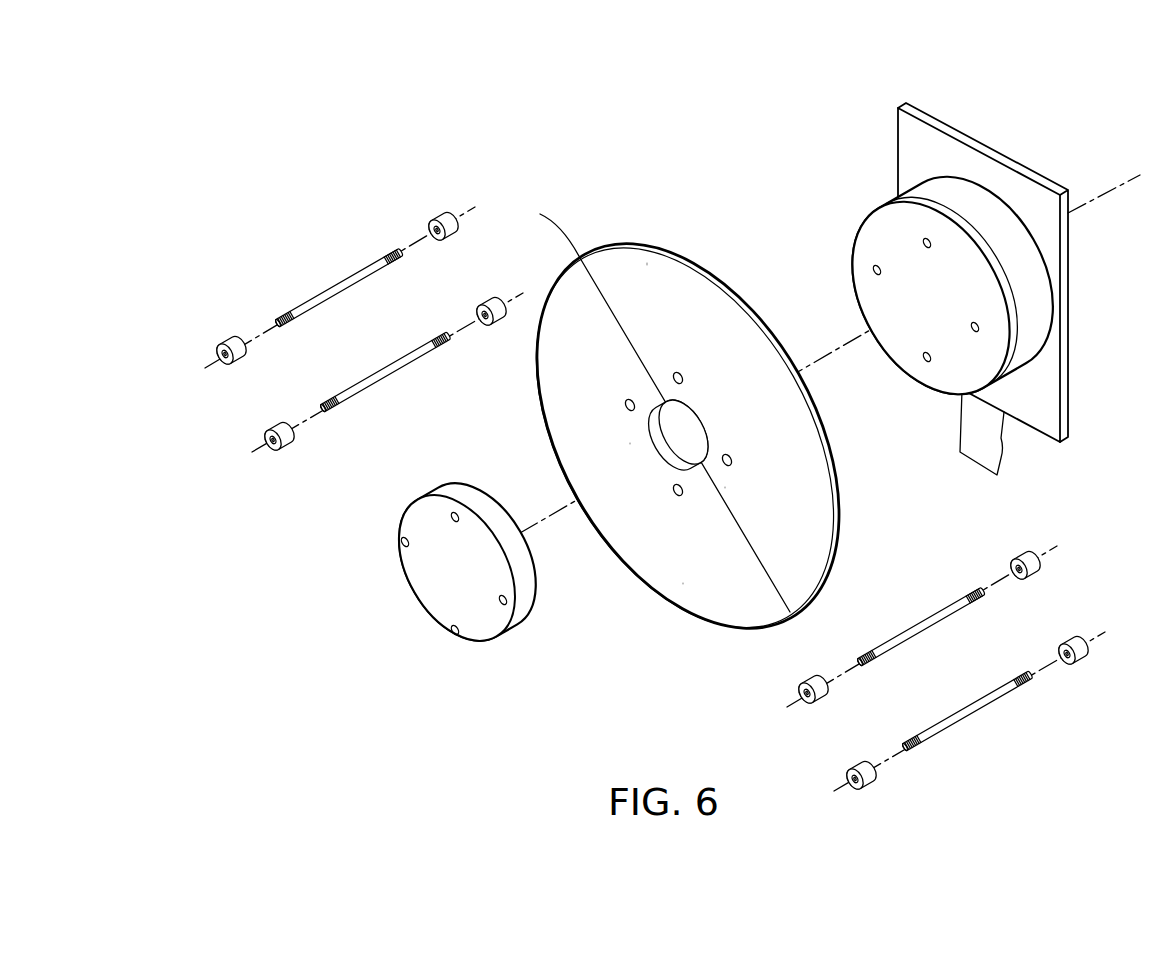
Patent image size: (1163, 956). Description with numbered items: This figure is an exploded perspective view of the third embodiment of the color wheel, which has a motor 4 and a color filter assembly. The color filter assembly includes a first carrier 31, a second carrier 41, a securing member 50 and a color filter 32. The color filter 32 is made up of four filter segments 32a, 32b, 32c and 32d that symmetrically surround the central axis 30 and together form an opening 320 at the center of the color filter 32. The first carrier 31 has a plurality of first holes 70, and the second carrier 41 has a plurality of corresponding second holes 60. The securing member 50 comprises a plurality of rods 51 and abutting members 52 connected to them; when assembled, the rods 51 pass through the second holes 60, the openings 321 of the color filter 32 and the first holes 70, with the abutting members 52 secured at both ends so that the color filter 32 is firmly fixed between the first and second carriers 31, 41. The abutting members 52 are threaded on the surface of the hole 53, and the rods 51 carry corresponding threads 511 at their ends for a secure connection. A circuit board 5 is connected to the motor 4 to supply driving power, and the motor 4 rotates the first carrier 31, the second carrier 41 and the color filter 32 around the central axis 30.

The motor 4 is at (1007, 220).
The circuit board 5 is at (978, 168).
The central axis 30 is at (1115, 187).
The first carrier 31 is at (900, 342).
The color filter 32 is at (688, 438).
The opening 320 is at (693, 420).
The openings 321 is at (731, 455).
The filter segment 32a is at (630, 443).
The filter segment 32b is at (683, 583).
The filter segment 32c is at (725, 487).
The filter segment 32d is at (647, 267).
The second carrier 41 is at (426, 496).
The securing member 50 is at (303, 233).
The rod 51 is at (334, 284).
The threaded portion 511 is at (388, 255).
The abutting member 52 is at (223, 341).
The hole 53 is at (222, 364).
The second holes 60 is at (400, 544).
The first holes 70 is at (975, 331).